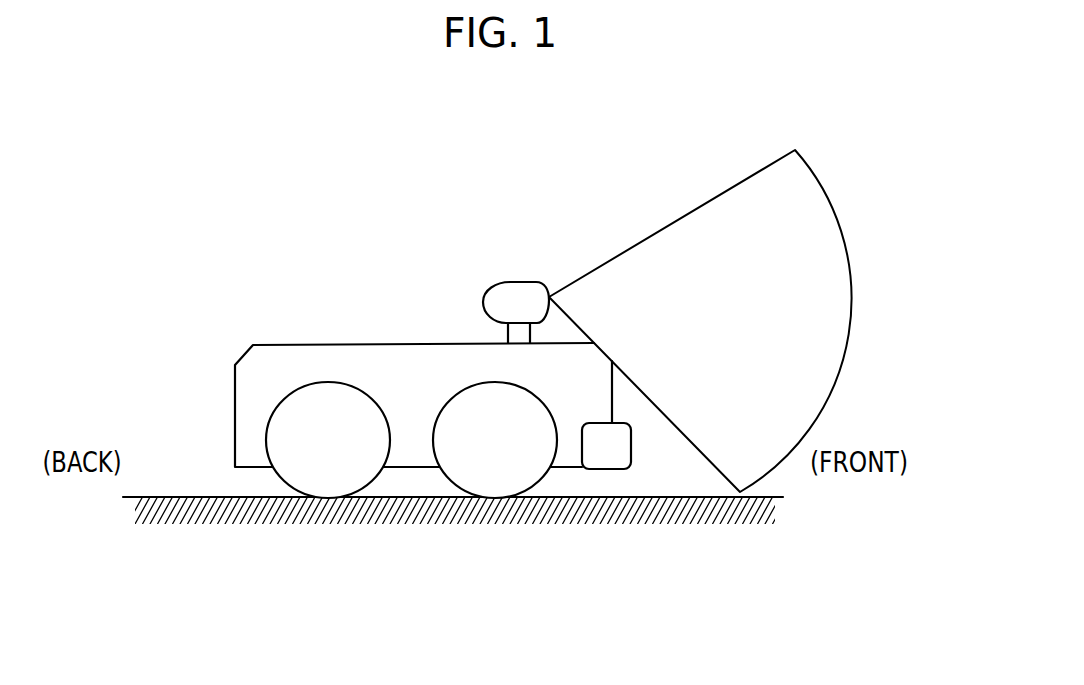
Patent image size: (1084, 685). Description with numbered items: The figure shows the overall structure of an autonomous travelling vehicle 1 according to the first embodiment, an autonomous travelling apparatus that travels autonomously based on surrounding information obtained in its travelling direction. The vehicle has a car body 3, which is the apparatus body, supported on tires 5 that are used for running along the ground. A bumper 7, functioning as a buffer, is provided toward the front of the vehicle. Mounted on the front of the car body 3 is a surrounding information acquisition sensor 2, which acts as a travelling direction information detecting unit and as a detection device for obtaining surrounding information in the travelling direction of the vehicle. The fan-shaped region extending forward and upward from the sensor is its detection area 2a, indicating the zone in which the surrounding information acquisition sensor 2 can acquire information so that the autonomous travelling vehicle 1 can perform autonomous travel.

The autonomous travelling vehicle 1 is at (236, 312).
The surrounding information acquisition sensor 2 is at (517, 290).
The detection area 2a is at (725, 228).
The car body 3 is at (245, 403).
The tires 5 is at (325, 480).
The bumper 7 is at (611, 458).